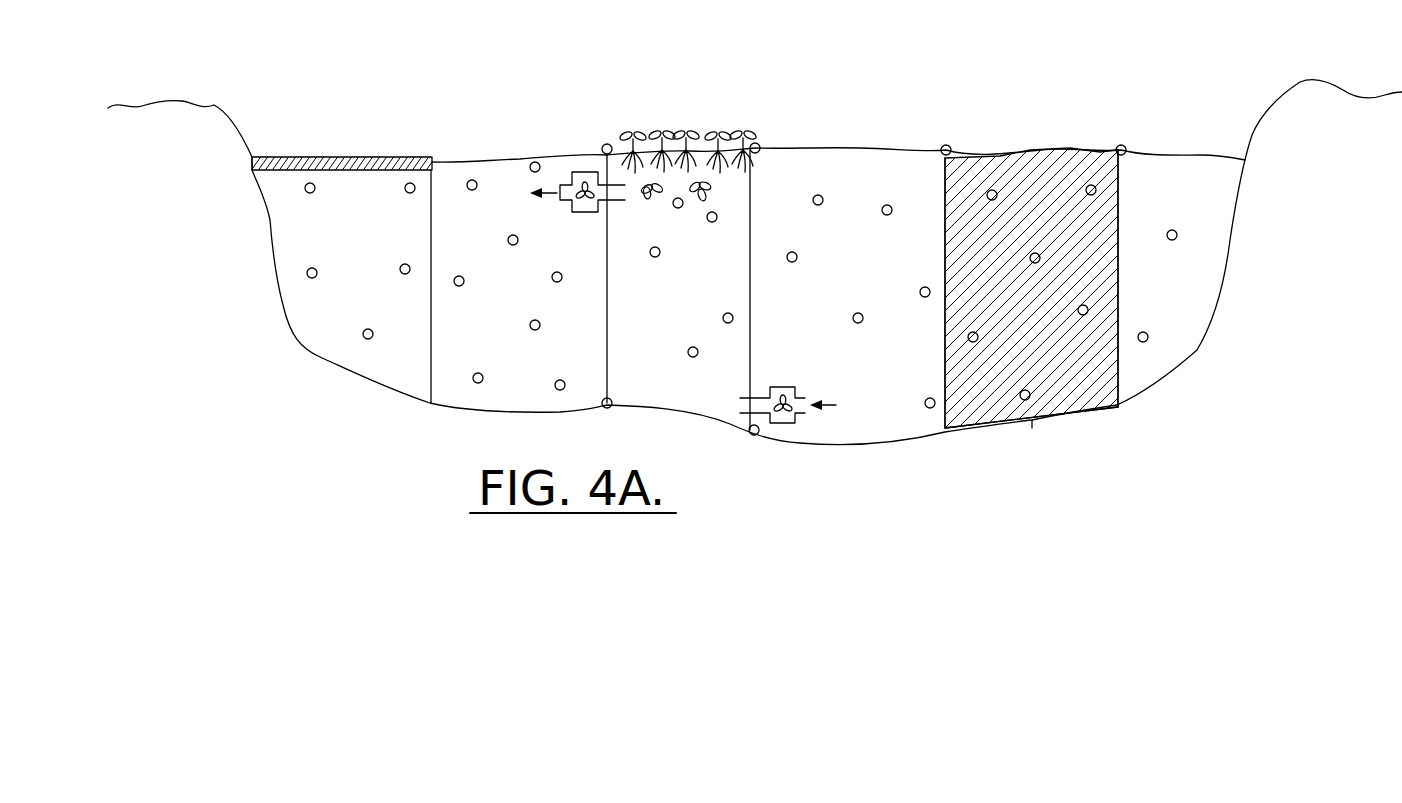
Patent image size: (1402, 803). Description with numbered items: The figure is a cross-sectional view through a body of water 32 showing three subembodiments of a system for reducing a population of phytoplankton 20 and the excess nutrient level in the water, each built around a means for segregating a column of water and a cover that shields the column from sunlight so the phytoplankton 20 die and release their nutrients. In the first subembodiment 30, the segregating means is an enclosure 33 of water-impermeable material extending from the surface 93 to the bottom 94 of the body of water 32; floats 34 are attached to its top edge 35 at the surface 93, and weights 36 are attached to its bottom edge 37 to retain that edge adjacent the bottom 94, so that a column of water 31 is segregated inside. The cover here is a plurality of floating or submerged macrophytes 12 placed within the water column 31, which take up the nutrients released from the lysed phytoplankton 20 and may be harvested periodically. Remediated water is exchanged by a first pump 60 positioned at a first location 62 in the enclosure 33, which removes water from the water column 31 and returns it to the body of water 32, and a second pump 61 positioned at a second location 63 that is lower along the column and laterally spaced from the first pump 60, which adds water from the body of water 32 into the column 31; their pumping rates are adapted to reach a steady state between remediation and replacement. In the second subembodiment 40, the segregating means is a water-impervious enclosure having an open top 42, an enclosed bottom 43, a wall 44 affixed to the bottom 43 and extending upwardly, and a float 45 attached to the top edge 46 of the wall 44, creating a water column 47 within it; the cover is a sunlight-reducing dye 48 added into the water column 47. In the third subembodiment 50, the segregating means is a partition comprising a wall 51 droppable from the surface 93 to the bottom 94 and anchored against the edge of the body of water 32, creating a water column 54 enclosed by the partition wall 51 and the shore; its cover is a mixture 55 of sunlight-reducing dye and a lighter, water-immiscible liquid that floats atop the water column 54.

The macrophytes 12 is at (719, 115).
The phytoplankton 20 is at (692, 346).
The first subembodiment 30 is at (677, 64).
The column of water 31 is at (676, 393).
The body of water 32 is at (1196, 206).
The enclosure 33 is at (609, 312).
The floats 34 is at (757, 145).
The top edge 35 is at (758, 152).
The weights 36 is at (759, 436).
The bottom edge 37 is at (605, 400).
The second subembodiment 40 is at (1037, 62).
The open top 42 is at (1068, 153).
The enclosed bottom 43 is at (1032, 428).
The wall 44 is at (1122, 286).
The float 45 is at (944, 147).
The top edge 46 is at (944, 156).
The water column 47 is at (1054, 320).
The sunlight-reducing dye 48 is at (1108, 377).
The third subembodiment 50 is at (346, 113).
The partition wall 51 is at (432, 249).
The water column 54 is at (369, 250).
The mixture 55 is at (405, 157).
The first pump 60 is at (586, 213).
The second pump 61 is at (788, 367).
The first location 62 is at (577, 191).
The second location 63 is at (751, 385).
The surface 93 is at (1177, 148).
The bottom 94 is at (1087, 431).